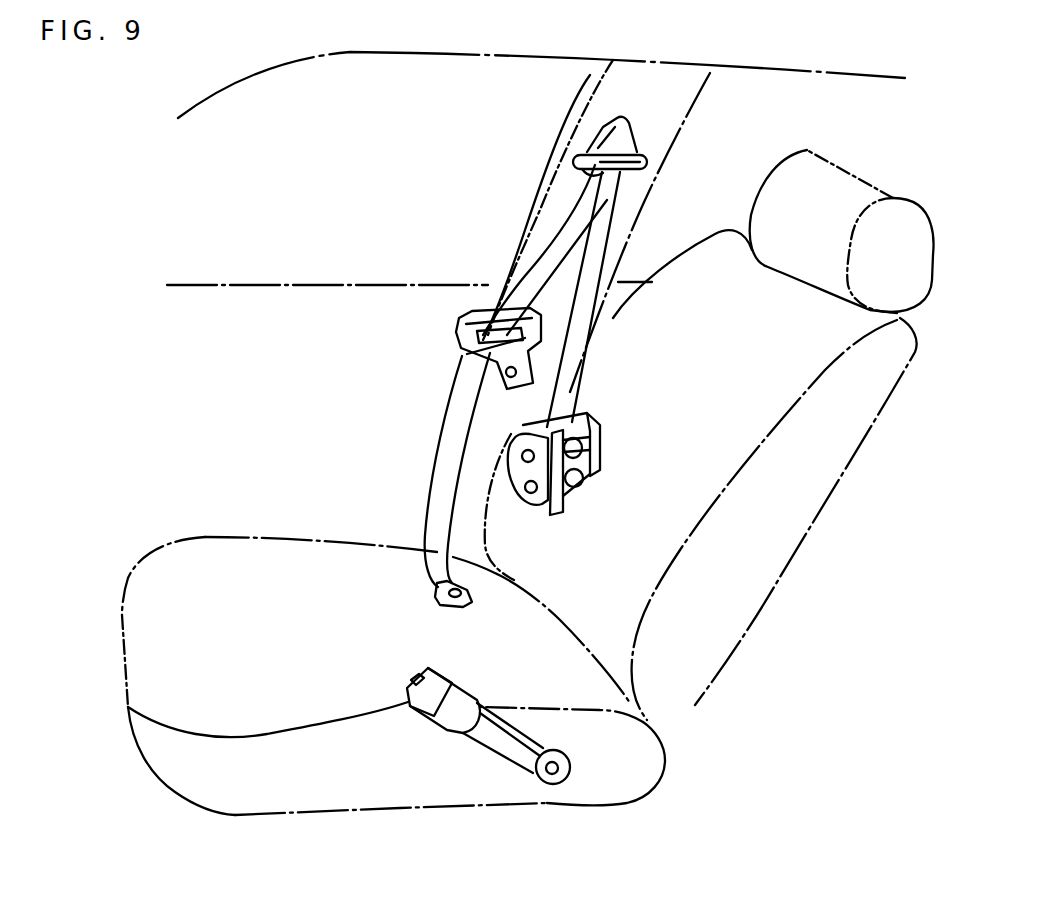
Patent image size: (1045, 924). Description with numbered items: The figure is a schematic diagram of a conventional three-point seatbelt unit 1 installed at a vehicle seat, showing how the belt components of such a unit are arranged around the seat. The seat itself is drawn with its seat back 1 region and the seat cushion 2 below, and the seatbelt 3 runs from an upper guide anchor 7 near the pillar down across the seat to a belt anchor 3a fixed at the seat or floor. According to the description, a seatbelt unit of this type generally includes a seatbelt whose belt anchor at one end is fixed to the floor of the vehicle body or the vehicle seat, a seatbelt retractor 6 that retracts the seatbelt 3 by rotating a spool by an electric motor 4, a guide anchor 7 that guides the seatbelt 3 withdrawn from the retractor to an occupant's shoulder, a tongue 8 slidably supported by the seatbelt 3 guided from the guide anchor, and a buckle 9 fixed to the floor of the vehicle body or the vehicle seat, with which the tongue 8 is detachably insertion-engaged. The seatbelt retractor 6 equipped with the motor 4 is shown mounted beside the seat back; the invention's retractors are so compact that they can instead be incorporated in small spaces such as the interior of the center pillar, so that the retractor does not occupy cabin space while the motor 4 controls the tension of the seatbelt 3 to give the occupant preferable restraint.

The seatbelt unit 1 is at (632, 556).
The seat cushion 2 is at (273, 795).
The seatbelt 3 is at (553, 241).
The webbing anchor end 3a is at (453, 607).
The motor 4 is at (573, 482).
The seatbelt retractor 6 is at (597, 450).
The shoulder anchor 7 is at (623, 142).
The tongue plate 8 is at (460, 353).
The buckle 9 is at (420, 705).